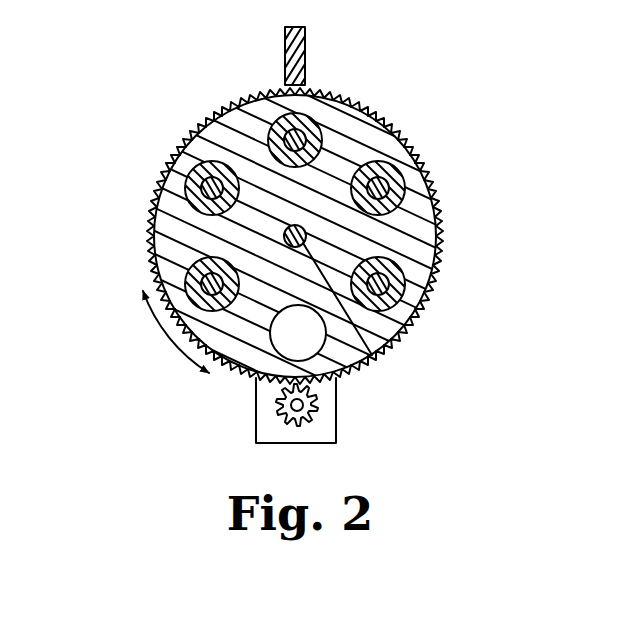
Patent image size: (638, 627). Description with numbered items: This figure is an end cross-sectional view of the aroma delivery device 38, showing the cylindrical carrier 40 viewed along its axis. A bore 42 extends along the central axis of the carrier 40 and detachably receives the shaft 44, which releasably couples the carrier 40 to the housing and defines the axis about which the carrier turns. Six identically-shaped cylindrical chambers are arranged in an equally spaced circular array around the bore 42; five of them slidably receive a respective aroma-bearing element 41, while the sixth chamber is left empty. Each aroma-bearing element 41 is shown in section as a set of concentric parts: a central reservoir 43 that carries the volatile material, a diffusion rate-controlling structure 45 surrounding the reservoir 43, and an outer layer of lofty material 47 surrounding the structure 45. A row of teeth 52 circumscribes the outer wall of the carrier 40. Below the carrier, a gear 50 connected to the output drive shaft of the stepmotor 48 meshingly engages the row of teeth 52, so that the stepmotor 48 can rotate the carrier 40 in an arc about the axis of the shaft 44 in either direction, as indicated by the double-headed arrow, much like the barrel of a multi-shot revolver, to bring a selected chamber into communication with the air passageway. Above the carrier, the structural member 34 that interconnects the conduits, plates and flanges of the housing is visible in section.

The structural member 34 is at (295, 70).
The aroma delivery device 38 is at (304, 239).
The cylindrical carrier 40 is at (418, 190).
The aroma-bearing element 41 is at (370, 160).
The bore 42 is at (306, 233).
The reservoir 43 is at (225, 107).
The shaft 44 is at (376, 366).
The diffusion rate-controlling structure 45 is at (167, 177).
The layer of lofty material 47 is at (277, 88).
The stepmotor 48 is at (323, 423).
The gear 50 is at (275, 412).
The row of teeth 52 is at (443, 207).